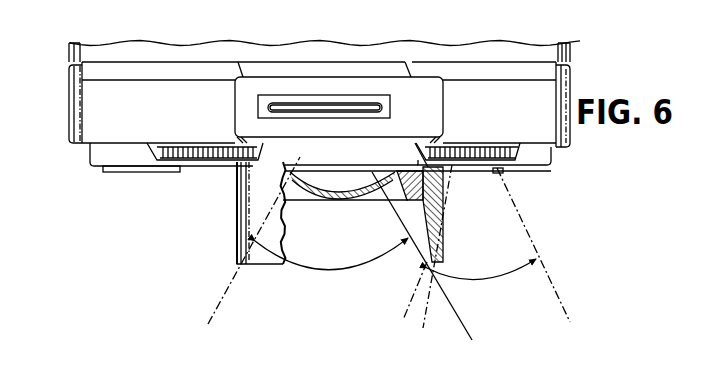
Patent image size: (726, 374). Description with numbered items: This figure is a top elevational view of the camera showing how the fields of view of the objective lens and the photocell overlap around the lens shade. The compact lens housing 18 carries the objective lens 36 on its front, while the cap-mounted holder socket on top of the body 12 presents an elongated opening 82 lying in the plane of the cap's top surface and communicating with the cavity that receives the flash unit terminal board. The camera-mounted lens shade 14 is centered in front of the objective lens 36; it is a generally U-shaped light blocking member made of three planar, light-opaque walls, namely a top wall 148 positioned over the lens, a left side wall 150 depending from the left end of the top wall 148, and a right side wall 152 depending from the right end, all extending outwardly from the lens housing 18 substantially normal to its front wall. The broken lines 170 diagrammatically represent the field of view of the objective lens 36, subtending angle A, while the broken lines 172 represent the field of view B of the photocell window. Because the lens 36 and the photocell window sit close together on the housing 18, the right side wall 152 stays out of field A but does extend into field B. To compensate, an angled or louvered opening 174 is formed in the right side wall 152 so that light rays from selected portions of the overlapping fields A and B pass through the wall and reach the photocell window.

The housing block 12 is at (233, 112).
The lens shade 14 is at (214, 213).
The lens housing 18 is at (93, 104).
The objective lens 36 is at (350, 190).
The elongated opening 82 is at (330, 112).
The top wall 148 is at (246, 180).
The left side wall 150 is at (236, 202).
The right side wall 152 is at (443, 183).
The broken lines 170 is at (237, 272).
The broken lines 172 is at (418, 280).
The angled or louvered opening 174 is at (440, 218).